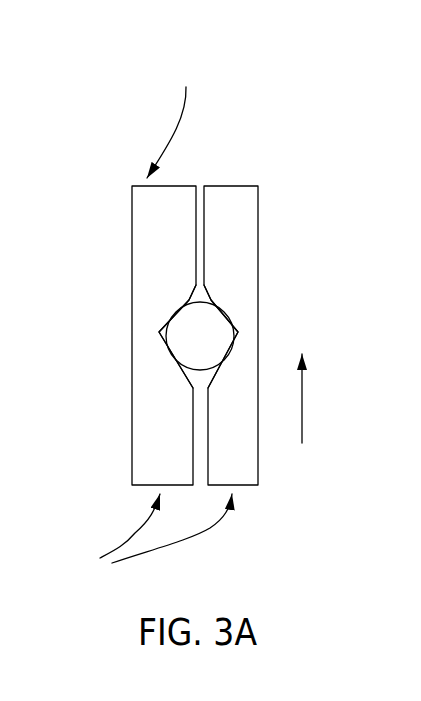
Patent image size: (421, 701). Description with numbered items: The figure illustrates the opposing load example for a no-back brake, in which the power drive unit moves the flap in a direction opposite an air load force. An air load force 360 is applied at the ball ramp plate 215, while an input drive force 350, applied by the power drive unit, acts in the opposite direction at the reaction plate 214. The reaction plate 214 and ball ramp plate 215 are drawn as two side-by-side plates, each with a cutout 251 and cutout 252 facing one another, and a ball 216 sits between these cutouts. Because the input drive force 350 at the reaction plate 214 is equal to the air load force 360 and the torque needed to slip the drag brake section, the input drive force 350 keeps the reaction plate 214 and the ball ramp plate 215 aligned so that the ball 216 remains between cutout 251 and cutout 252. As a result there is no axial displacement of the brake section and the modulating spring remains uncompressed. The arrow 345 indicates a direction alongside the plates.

The reaction plate 214 is at (140, 237).
The ball ramp plate 215 is at (248, 235).
The ball 216 is at (186, 351).
The cutout 251 is at (168, 340).
The cutout 252 is at (238, 333).
The direction of travel arrow 345 is at (302, 403).
The input drive force 350 is at (147, 536).
The air load force 360 is at (172, 118).